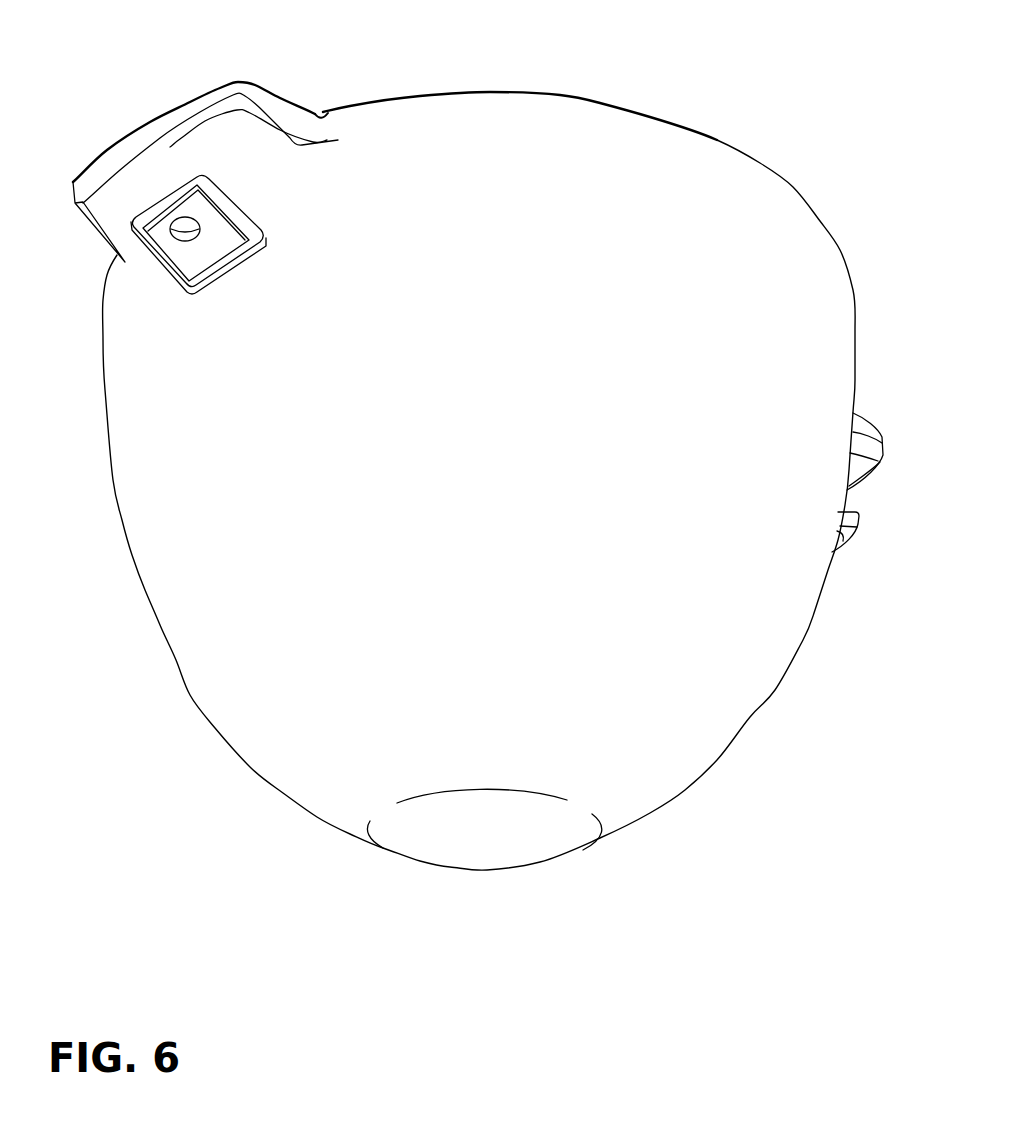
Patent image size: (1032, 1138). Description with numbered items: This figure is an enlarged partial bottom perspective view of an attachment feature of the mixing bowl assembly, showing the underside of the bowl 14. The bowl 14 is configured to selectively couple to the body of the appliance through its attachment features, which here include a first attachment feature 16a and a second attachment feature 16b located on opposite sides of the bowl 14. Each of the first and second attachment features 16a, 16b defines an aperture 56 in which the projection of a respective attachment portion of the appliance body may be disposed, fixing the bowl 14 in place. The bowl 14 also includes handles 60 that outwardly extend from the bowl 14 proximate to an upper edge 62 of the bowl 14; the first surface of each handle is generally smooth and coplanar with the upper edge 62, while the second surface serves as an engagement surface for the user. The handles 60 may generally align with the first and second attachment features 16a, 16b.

The bowl 14 is at (253, 547).
The upper edge 62 is at (405, 98).
The handles 60 is at (110, 153).
The first attachment feature 16a is at (157, 254).
The aperture 56 is at (185, 229).
The second attachment feature 16b is at (850, 537).